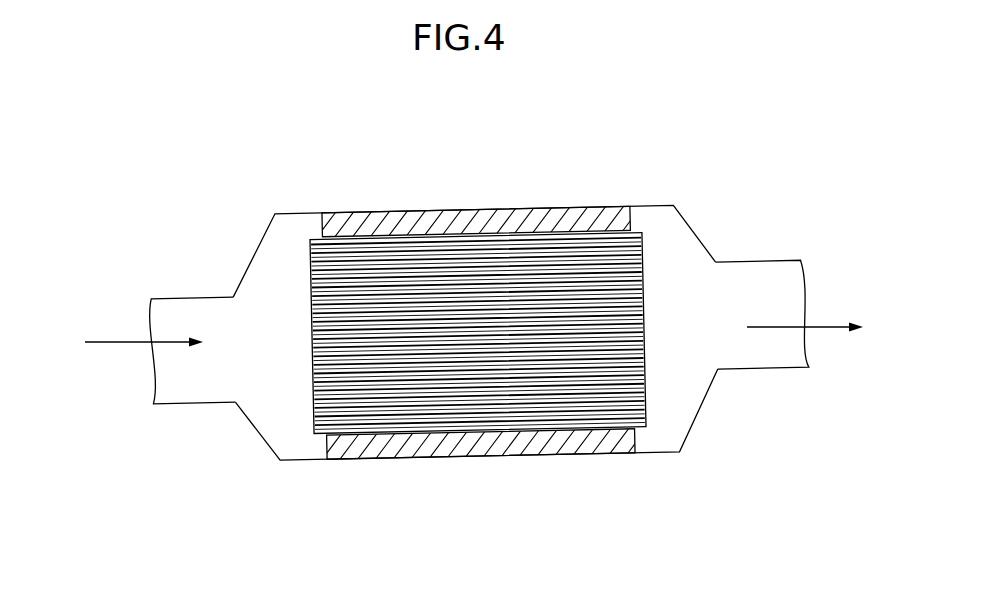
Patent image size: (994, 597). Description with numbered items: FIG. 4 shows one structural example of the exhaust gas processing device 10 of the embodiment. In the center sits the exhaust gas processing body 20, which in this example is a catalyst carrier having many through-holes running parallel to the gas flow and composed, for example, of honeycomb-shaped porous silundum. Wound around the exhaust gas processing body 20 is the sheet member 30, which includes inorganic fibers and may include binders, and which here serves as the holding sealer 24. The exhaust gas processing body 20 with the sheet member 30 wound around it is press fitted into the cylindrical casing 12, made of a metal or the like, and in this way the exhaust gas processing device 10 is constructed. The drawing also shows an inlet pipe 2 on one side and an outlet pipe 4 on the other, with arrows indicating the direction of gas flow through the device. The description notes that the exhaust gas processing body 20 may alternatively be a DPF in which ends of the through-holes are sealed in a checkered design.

The inlet exhaust pipe 2 is at (193, 298).
The outlet exhaust pipe 4 is at (780, 295).
The exhaust gas processing device 10 is at (561, 138).
The cylindrical casing 12 is at (303, 462).
The exhaust gas processing body 20 is at (658, 259).
The holding sealer 24 is at (472, 335).
The sheet member 30 is at (450, 210).